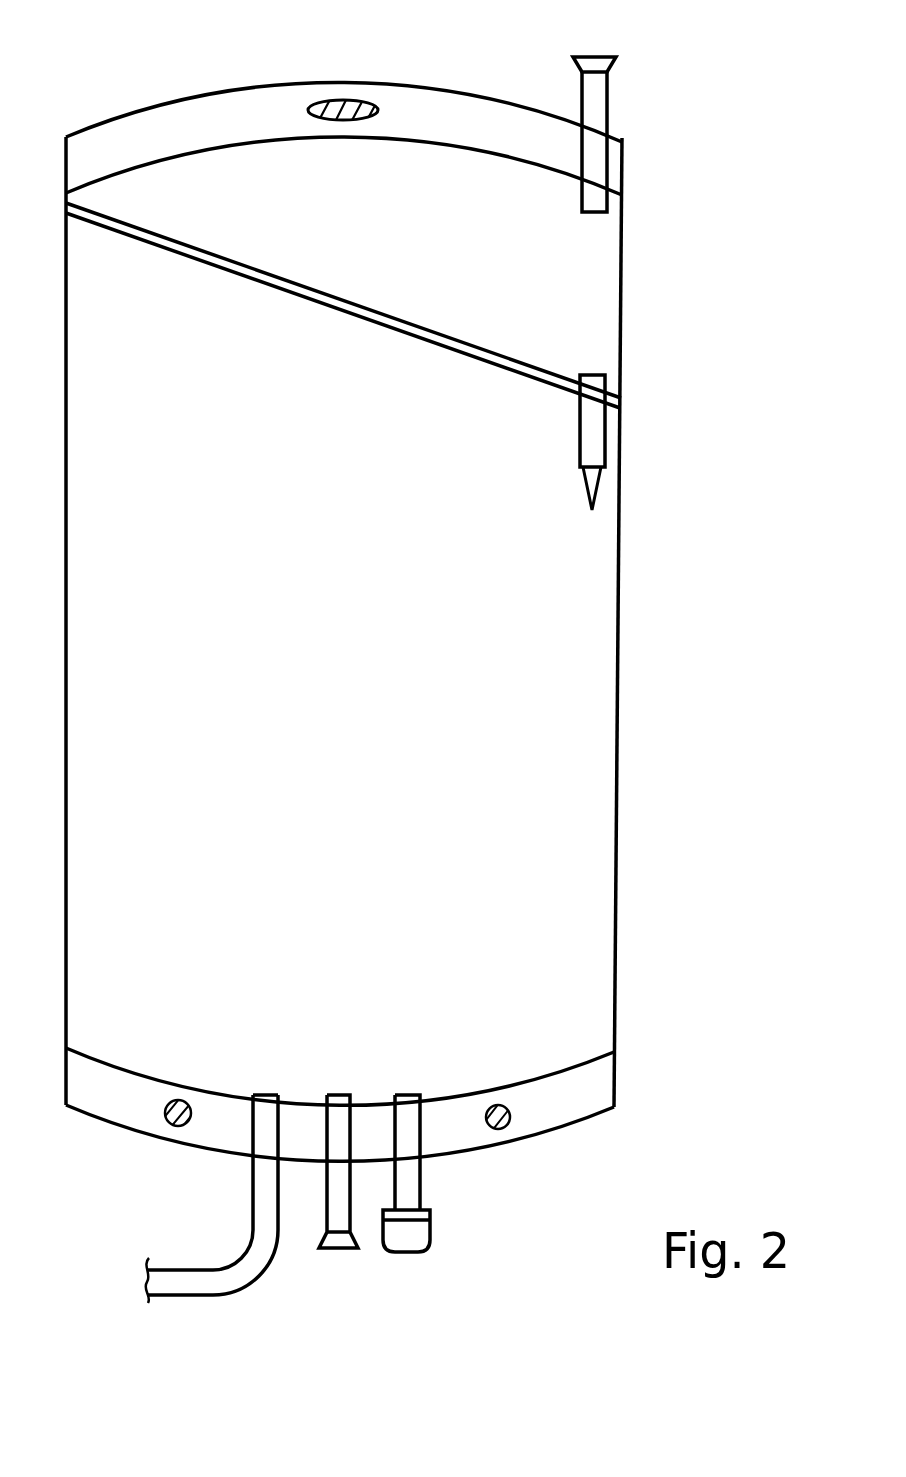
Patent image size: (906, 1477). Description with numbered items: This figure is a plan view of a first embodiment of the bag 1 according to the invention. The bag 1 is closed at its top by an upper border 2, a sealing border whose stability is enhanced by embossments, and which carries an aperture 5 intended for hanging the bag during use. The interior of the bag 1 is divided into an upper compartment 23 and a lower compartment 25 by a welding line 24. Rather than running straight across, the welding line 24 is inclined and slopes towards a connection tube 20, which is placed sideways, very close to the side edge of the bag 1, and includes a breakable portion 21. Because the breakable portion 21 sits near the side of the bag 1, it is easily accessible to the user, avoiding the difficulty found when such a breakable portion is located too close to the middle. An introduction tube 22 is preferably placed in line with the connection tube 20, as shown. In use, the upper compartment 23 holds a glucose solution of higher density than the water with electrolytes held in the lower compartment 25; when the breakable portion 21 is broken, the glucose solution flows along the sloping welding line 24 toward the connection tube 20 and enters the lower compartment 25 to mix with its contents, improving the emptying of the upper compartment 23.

The bag 1 is at (619, 700).
The upper border 2 is at (622, 167).
The aperture 5 is at (342, 100).
The connection tube 20 is at (606, 382).
The breakable portion 21 is at (598, 482).
The introduction tube 22 is at (608, 90).
The upper compartment 23 is at (608, 247).
The welding line 24 is at (530, 367).
The lower compartment 25 is at (600, 908).